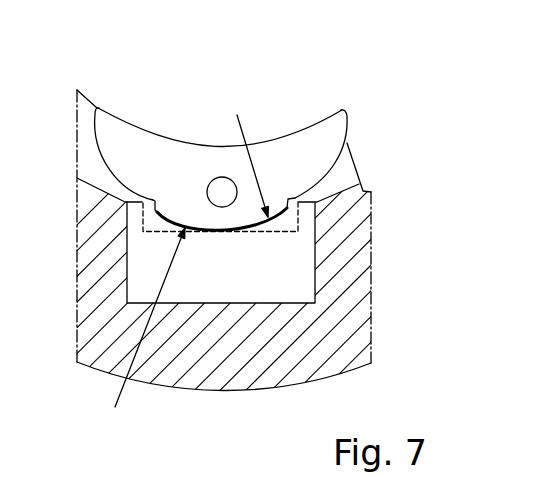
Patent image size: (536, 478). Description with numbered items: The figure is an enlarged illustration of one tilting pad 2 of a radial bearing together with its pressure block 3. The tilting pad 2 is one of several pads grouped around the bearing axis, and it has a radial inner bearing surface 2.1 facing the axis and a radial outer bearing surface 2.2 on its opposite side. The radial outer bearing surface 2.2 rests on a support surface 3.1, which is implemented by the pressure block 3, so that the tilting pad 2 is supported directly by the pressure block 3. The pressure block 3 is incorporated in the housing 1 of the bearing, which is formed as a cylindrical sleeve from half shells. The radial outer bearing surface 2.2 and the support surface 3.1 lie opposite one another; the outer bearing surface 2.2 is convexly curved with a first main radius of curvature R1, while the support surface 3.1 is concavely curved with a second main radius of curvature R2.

The housing 1 is at (238, 385).
The tilting pad 2 is at (118, 142).
The pressure block 3 is at (140, 248).
The radial inner bearing surface 2.1 is at (138, 131).
The radial outer bearing surface 2.2 is at (173, 220).
The support surface 3.1 is at (291, 201).
The first main radius of curvature R1 is at (250, 120).
The second main radius of curvature R2 is at (148, 353).